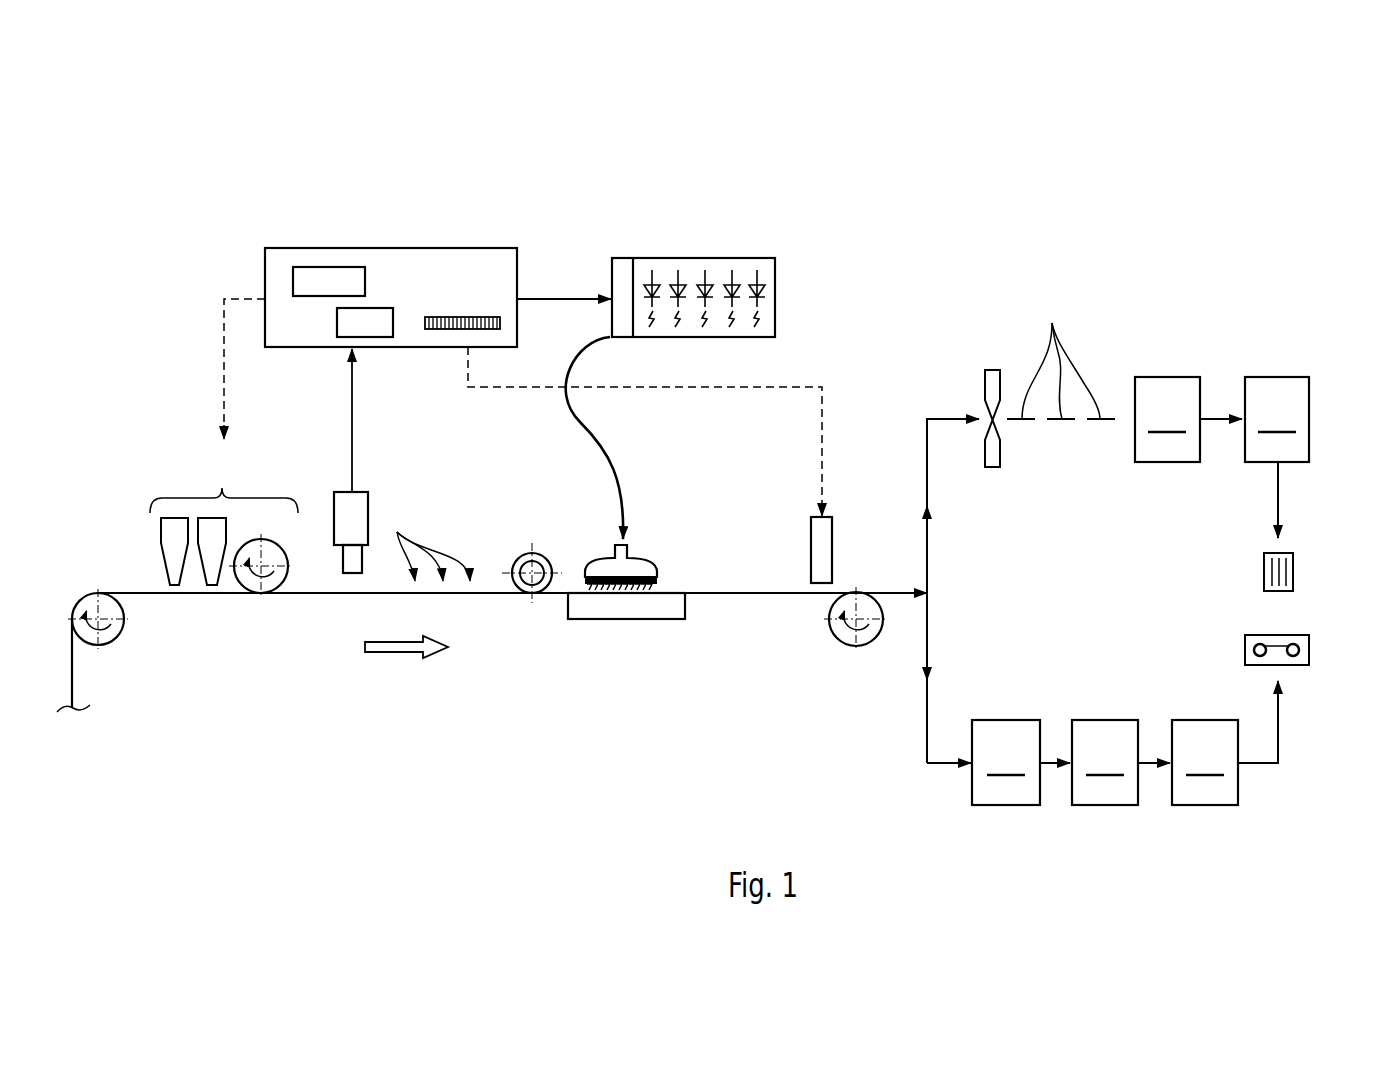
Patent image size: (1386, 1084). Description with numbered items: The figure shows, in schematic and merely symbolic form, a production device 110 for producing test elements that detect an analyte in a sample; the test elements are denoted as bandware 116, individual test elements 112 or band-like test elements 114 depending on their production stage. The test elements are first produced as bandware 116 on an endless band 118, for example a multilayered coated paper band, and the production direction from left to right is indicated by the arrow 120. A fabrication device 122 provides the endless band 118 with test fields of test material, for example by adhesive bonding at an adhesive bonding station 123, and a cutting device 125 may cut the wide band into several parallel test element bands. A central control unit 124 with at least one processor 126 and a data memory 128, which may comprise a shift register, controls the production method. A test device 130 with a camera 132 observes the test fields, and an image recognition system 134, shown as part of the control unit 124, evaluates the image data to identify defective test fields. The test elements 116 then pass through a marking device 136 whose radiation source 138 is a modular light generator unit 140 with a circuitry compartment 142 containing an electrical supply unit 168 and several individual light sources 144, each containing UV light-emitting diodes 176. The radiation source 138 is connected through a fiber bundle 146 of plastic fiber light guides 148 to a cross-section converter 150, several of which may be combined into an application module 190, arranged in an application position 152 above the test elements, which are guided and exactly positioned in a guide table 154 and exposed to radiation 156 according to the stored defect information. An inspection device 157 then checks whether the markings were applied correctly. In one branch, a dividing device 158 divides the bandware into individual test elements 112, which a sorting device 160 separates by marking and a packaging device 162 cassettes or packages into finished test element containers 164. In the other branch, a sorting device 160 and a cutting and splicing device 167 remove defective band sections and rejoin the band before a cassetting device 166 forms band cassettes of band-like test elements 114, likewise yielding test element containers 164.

The production device 110 is at (1182, 262).
The individual test elements 112 is at (1061, 355).
The band-like test elements 114 is at (1293, 658).
The test elements as bandware 116 is at (425, 539).
The endless band 118 is at (147, 592).
The arrow 120 is at (397, 652).
The fabrication device 122 is at (222, 490).
The adhesive bonding station 123 is at (270, 586).
The central control unit 124 is at (396, 245).
The cutting device 125 is at (543, 553).
The processor 126 is at (318, 275).
The data memory 128 is at (475, 322).
The test device 130 is at (368, 331).
The camera 132 is at (348, 500).
The image recognition system 134 is at (340, 328).
The marking device 136 is at (656, 445).
The radiation source 138 is at (716, 250).
The light generator unit 140 is at (698, 255).
The circuitry compartment 142 is at (776, 268).
The individual light sources 144 is at (697, 245).
The fiber bundle 146 is at (647, 438).
The plastic fiber light guides 148 is at (593, 420).
The cross-section converter 150 is at (657, 524).
The application position 152 is at (605, 545).
The guide table 154 is at (627, 612).
The radiation 156 is at (657, 588).
The inspection device 157 is at (823, 545).
The dividing device 158 is at (992, 372).
The sorting device 160 is at (1107, 591).
The packaging device 162 is at (1277, 457).
The test element containers 164 is at (1263, 568).
The cassetting device 166 is at (1225, 743).
The cutting and splicing device 167 is at (1121, 762).
The electrical supply unit 168 is at (617, 280).
The UV light-emitting diodes 176 is at (648, 280).
The application module 190 is at (625, 565).